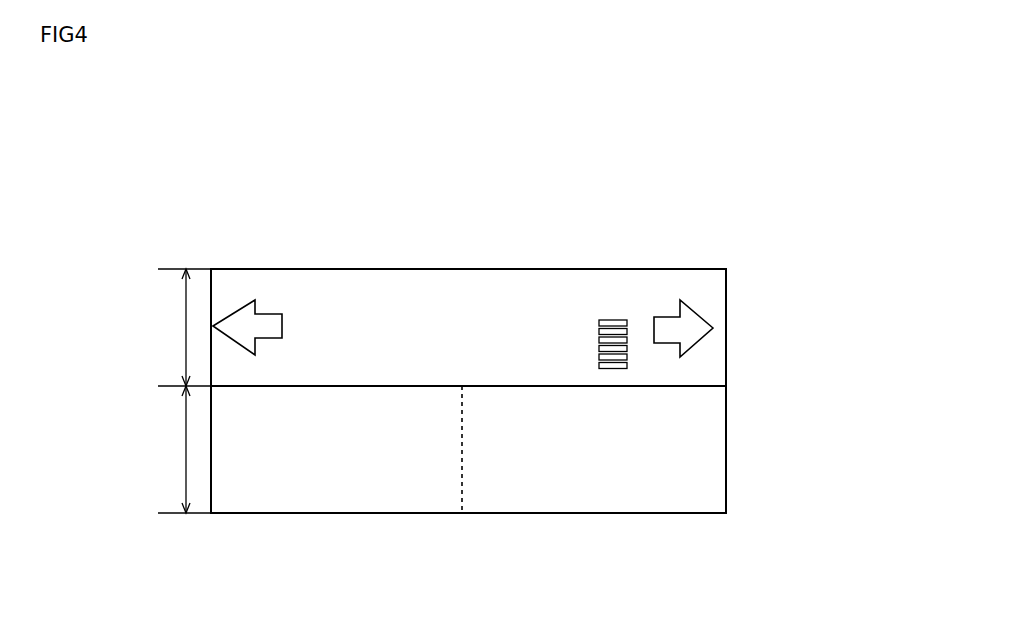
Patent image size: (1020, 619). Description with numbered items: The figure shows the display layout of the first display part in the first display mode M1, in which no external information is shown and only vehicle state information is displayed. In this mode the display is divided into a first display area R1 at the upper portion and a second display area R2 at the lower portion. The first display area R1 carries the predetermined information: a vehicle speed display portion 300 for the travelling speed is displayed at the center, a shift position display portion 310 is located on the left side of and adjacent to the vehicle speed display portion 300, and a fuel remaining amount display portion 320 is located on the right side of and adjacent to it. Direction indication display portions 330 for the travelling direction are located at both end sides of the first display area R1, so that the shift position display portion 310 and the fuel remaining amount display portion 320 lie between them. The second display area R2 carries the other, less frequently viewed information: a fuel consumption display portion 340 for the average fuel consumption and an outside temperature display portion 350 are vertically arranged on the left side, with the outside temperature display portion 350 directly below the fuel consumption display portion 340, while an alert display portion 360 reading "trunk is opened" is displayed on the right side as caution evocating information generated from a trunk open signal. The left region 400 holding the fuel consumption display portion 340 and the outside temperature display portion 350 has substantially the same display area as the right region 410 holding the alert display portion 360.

The first display mode M1 is at (540, 248).
The first display area R1 is at (186, 326).
The second display area R2 is at (186, 452).
The vehicle speed display portion 300 is at (478, 312).
The shift position display portion 310 is at (363, 304).
The fuel remaining amount display portion 320 is at (613, 320).
The direction indication display portion 330 is at (718, 256).
The fuel consumption display portion 340 is at (437, 441).
The outside temperature display portion 350 is at (348, 484).
The alert display portion 360 is at (560, 458).
The left region 400 is at (264, 497).
The right region 410 is at (662, 498).